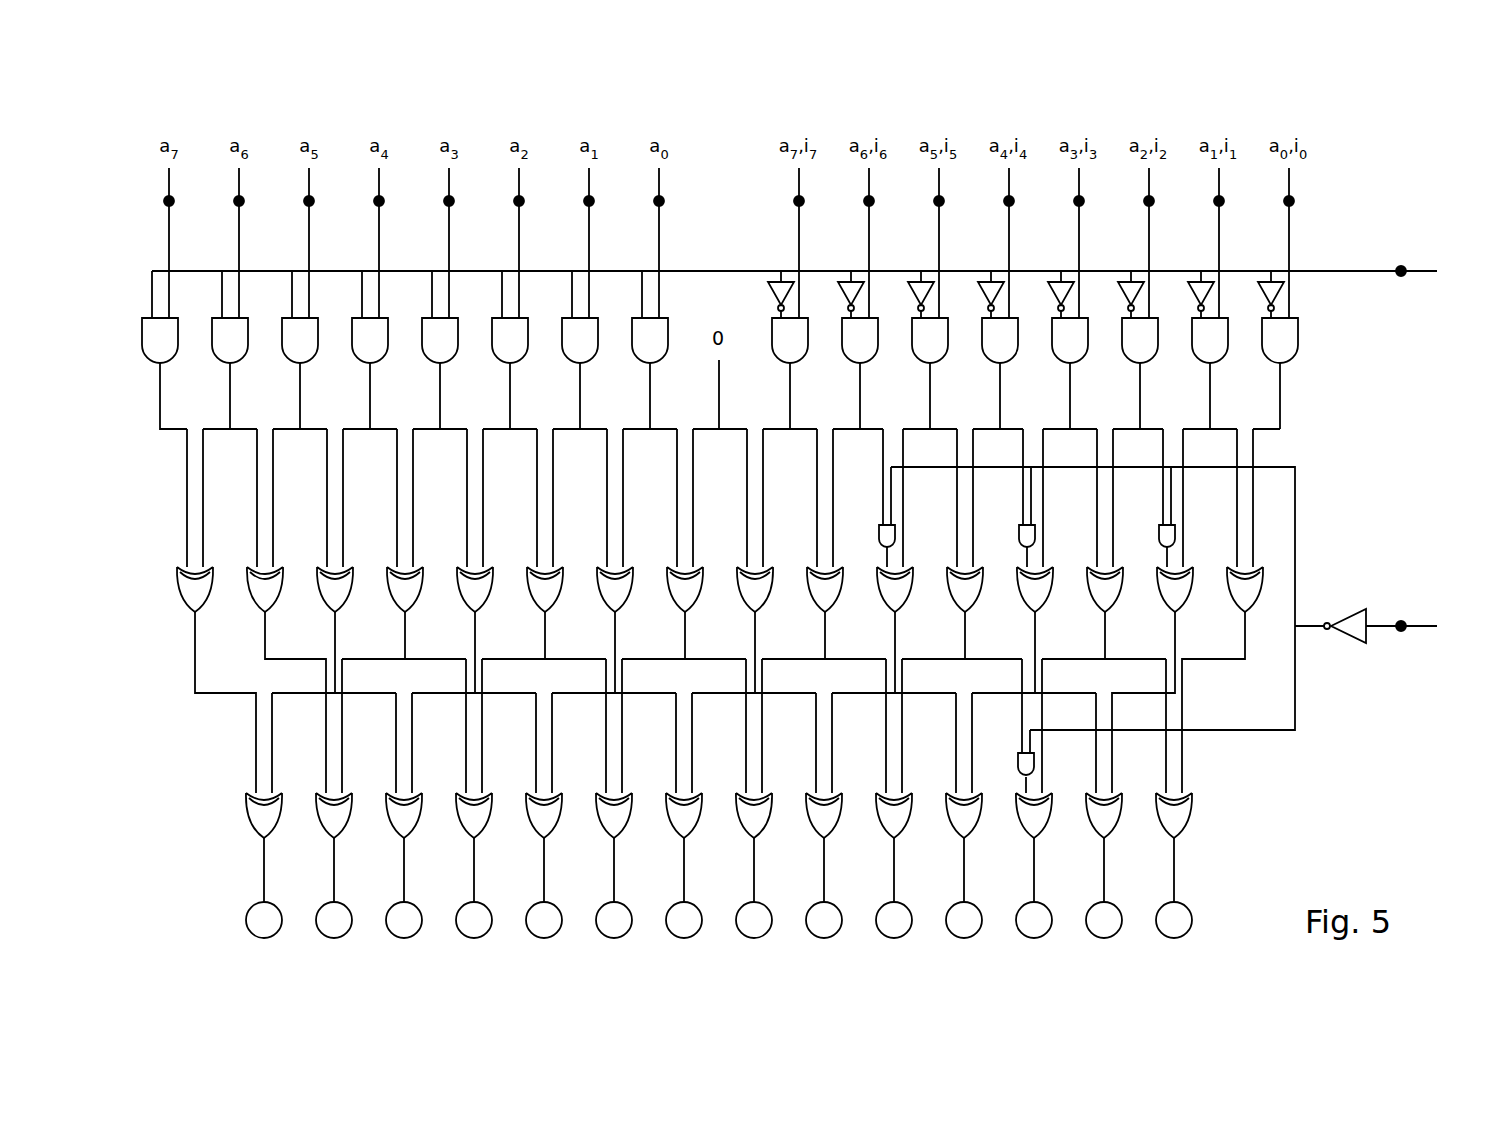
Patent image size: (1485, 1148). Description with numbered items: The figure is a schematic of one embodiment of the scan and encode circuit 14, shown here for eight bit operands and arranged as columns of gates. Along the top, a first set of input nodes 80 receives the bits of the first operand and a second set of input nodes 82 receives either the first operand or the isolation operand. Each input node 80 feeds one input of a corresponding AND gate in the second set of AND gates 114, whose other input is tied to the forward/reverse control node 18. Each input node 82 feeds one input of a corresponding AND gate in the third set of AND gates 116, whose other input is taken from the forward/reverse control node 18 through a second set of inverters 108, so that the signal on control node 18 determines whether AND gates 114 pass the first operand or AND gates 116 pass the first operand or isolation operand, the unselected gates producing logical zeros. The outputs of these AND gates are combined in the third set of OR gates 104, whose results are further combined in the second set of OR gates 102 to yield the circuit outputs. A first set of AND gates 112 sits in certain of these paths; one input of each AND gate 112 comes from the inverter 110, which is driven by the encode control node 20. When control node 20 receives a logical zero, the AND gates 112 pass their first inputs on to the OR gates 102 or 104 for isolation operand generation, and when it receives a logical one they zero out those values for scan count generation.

The scan and encode circuit 14 is at (200, 105).
The forward/reverse control node 18 is at (1409, 267).
The encode control node 20 is at (1409, 620).
The first set of input nodes 80 is at (653, 203).
The second set of input nodes 82 is at (1283, 203).
The second set of OR gates 102 is at (1160, 852).
The third set of OR gates 104 is at (1231, 628).
The second set of inverters 108 is at (1263, 282).
The inverter 110 is at (1346, 644).
The first set of AND gates 112 is at (1017, 755).
The second set of AND gates 114 is at (672, 377).
The third set of AND gates 116 is at (1302, 377).